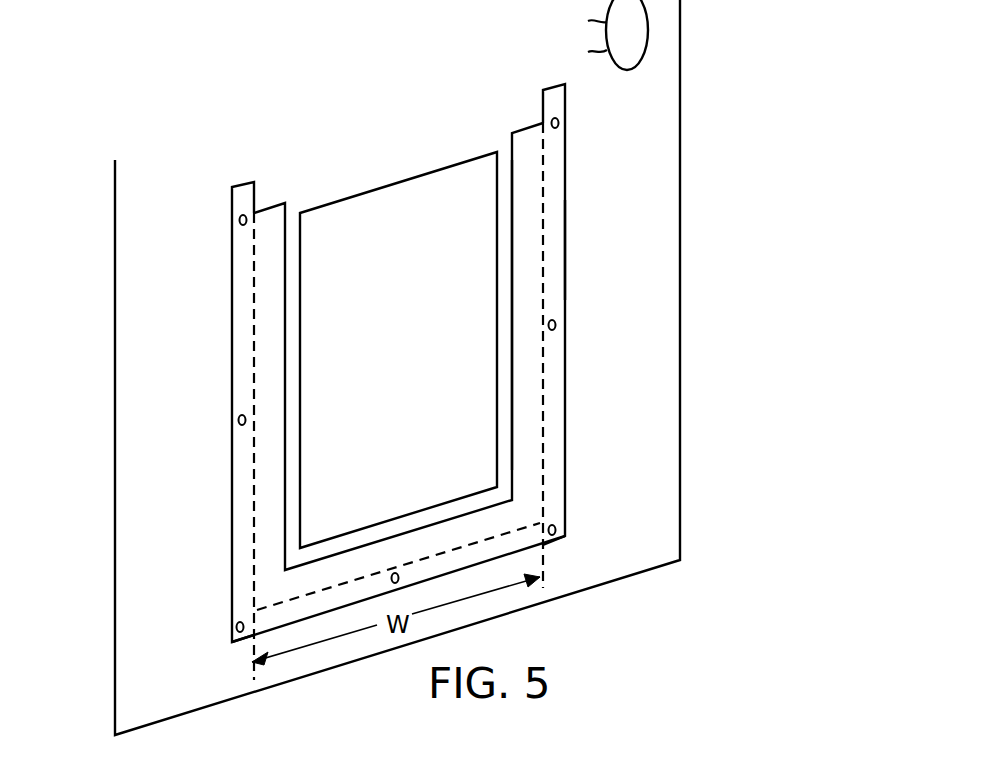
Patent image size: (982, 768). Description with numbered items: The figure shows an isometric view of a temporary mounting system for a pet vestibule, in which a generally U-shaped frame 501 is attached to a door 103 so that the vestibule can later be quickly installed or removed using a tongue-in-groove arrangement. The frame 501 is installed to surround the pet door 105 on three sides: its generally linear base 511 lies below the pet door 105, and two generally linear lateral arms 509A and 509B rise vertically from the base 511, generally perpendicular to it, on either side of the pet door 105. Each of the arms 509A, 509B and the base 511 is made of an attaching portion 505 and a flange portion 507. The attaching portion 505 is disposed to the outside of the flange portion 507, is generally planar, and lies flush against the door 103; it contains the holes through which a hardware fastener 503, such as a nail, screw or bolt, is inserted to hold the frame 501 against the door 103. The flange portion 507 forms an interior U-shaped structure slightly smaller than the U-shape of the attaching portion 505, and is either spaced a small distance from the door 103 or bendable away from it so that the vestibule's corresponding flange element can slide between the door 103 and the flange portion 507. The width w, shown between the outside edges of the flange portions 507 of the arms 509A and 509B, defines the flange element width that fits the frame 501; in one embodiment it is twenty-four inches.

The door 103 is at (142, 182).
The pet door 105 is at (355, 347).
The U-shaped frame 501 is at (557, 420).
The hardware fastener 503 is at (560, 122).
The attaching portion 505 is at (557, 250).
The flange portion 507 is at (527, 182).
The lateral arm 509A is at (557, 352).
The lateral arm 509B is at (245, 505).
The base 511 is at (517, 540).